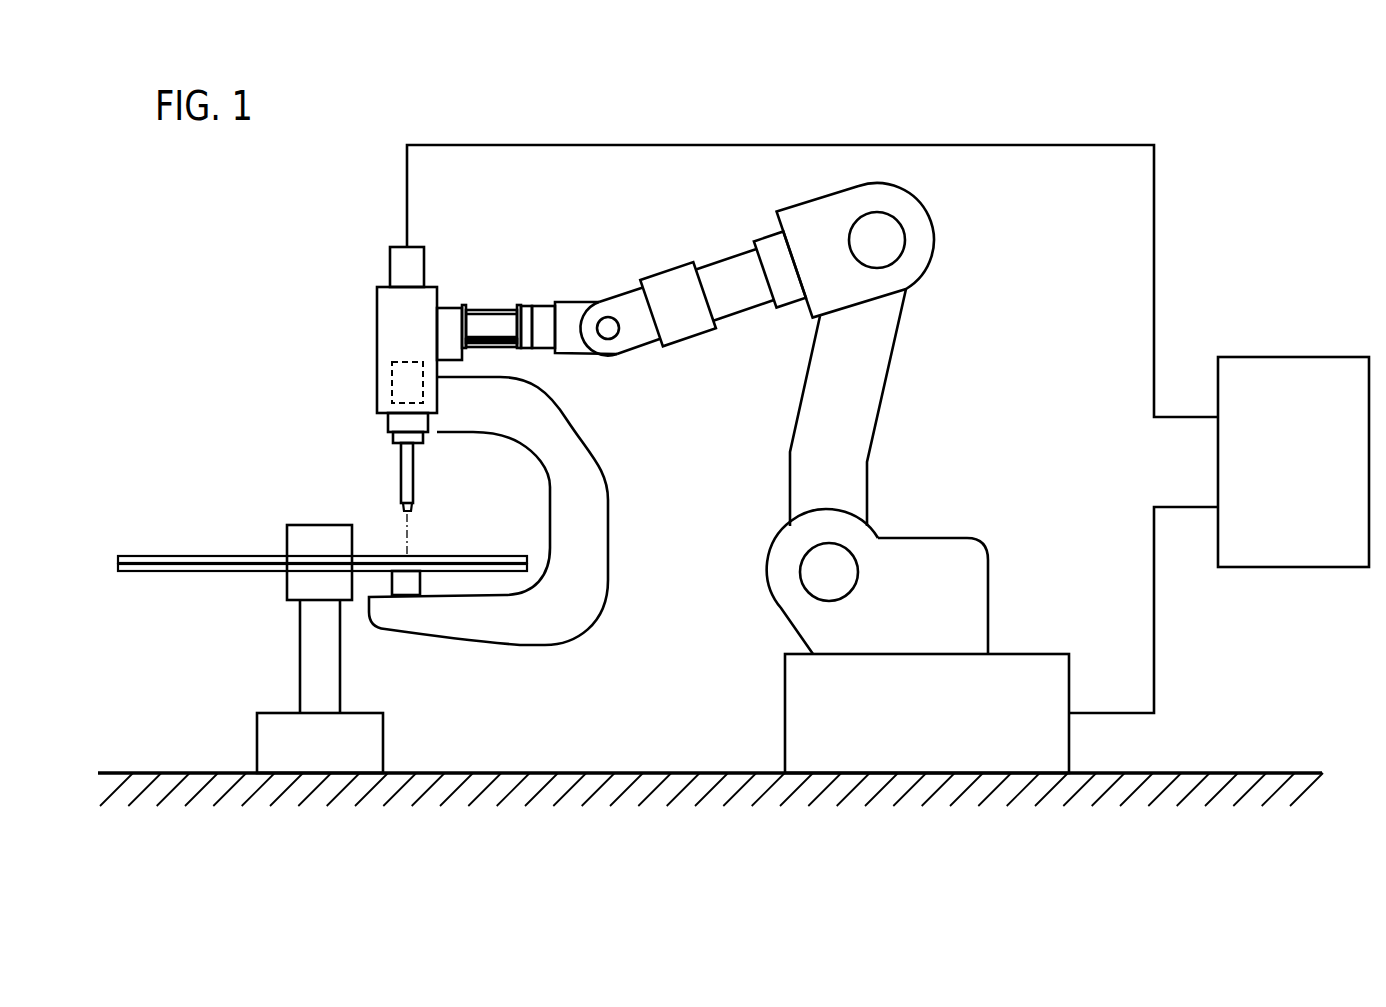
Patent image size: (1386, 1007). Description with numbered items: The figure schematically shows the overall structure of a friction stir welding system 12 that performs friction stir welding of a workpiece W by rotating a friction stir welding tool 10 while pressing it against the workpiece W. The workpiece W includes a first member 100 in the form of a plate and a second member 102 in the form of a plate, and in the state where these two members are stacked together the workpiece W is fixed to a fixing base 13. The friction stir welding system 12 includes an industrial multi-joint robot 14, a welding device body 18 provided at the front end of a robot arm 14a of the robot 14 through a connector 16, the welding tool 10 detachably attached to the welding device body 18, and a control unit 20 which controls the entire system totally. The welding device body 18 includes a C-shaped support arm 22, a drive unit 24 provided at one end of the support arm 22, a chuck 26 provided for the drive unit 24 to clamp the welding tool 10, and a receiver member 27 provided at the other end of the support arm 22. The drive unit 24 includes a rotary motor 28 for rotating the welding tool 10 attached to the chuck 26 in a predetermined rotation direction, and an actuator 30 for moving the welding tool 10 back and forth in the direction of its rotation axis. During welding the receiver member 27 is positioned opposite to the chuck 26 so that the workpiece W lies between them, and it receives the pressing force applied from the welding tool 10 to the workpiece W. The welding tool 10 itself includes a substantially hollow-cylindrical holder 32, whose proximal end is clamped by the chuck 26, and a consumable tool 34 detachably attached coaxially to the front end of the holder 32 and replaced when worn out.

The friction stir welding tool 10 is at (360, 499).
The friction stir welding system 12 is at (314, 152).
The fixing base 13 is at (288, 525).
The industrial multi-joint robot 14 is at (812, 478).
The robot arm 14a is at (627, 299).
The connector 16 is at (480, 321).
The welding device body 18 is at (487, 465).
The control unit 20 is at (1317, 356).
The C-shaped support arm 22 is at (597, 512).
The drive unit 24 is at (385, 305).
The chuck 26 is at (393, 422).
The receiver member 27 is at (405, 583).
The rotary motor 28 is at (397, 261).
The actuator 30 is at (393, 373).
The holder 32 is at (403, 465).
The tool 34 is at (378, 523).
The first member 100 is at (178, 557).
The second member 102 is at (233, 620).
The workpiece W is at (322, 601).